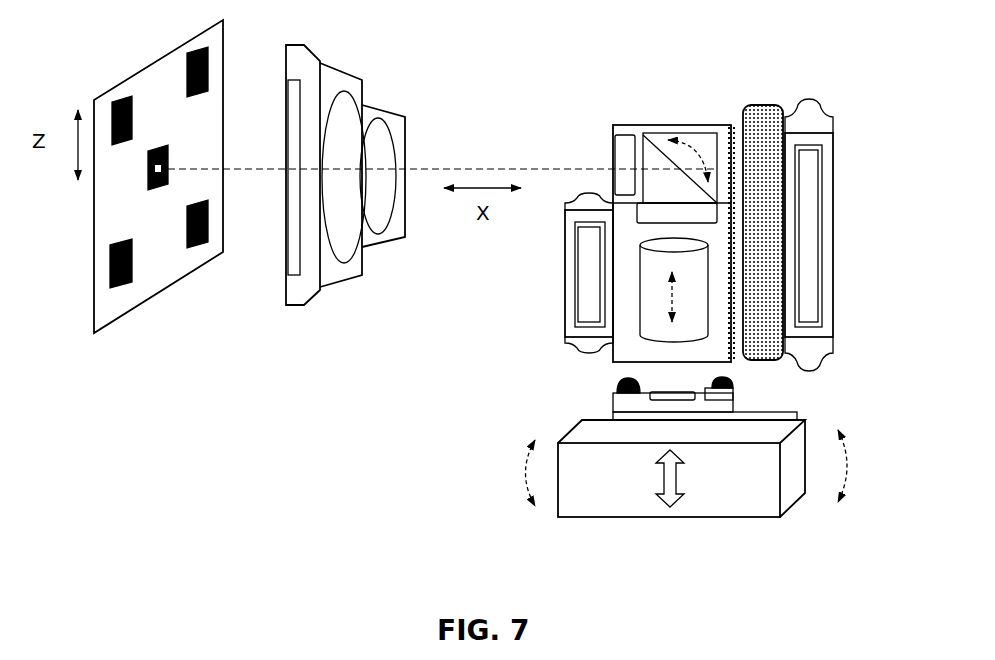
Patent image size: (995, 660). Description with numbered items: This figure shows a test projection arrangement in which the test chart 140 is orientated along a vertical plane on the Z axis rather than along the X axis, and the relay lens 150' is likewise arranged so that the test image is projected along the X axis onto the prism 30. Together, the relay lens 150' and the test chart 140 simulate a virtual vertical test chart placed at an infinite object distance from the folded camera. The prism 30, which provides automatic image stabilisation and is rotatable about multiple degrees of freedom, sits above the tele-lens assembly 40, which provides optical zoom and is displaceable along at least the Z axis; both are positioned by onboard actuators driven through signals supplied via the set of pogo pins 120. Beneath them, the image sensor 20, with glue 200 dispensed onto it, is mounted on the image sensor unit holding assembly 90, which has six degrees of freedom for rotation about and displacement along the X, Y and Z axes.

The test chart 140 is at (158, 302).
The relay lens 150' is at (360, 191).
The prism 30 is at (645, 153).
The tele-lens assembly 40 is at (638, 245).
The set of pogo pins 120 is at (738, 130).
The image sensor 20 is at (647, 395).
The glue 200 is at (738, 385).
The image sensor unit holding assembly 90 is at (675, 518).